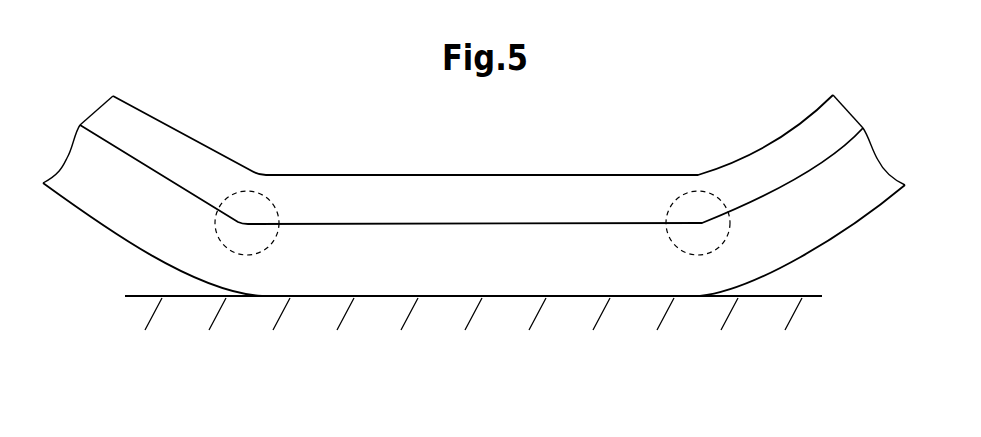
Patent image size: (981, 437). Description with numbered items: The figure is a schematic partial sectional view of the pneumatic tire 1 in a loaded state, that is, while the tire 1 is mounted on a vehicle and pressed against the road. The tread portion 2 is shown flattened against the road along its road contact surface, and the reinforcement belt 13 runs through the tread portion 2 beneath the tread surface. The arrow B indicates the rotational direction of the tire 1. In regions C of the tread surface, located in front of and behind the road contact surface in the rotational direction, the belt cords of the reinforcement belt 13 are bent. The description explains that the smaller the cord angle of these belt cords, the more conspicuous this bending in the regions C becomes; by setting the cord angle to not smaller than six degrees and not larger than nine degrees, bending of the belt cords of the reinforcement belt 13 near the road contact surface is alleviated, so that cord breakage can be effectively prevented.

The tire 1 is at (474, 190).
The reinforcement belt 13 is at (142, 167).
The tread portion 2 is at (473, 352).
The arrow indicating rotational direction of the tire B is at (43, 232).
The regions of bending C is at (268, 247).